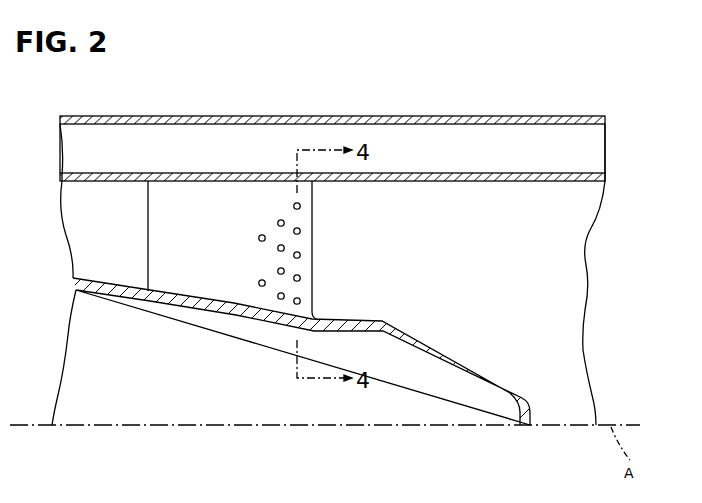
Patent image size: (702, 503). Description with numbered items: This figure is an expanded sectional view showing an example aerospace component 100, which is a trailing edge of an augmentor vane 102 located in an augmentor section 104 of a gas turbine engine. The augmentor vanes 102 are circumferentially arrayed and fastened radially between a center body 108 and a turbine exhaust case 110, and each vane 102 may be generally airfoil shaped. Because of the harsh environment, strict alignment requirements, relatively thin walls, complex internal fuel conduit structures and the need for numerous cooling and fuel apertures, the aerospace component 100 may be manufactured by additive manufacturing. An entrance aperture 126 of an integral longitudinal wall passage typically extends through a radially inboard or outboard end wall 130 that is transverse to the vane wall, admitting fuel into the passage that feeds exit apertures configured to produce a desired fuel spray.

The aerospace component 100 is at (342, 307).
The augmentor vane 102 is at (222, 246).
The augmentor section 104 is at (284, 92).
The center body 108 is at (207, 361).
The turbine exhaust case 110 is at (398, 116).
The entrance aperture 126 is at (222, 188).
The end wall 130 is at (279, 326).